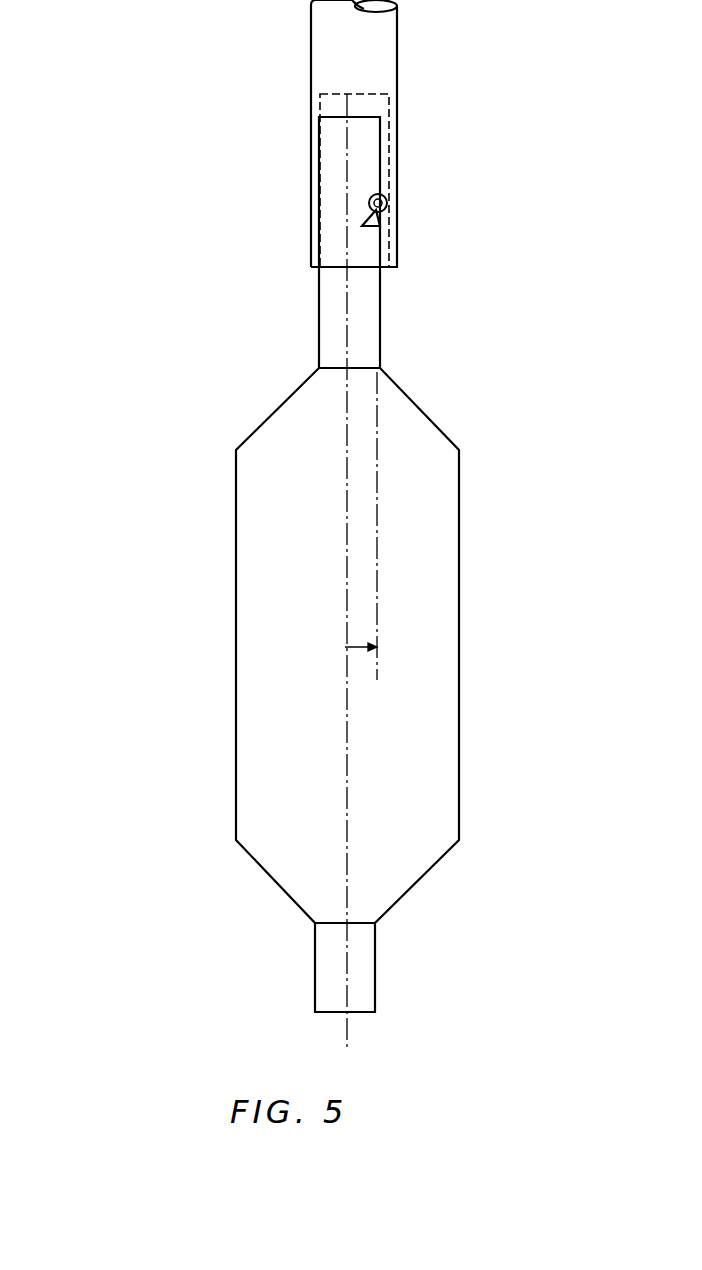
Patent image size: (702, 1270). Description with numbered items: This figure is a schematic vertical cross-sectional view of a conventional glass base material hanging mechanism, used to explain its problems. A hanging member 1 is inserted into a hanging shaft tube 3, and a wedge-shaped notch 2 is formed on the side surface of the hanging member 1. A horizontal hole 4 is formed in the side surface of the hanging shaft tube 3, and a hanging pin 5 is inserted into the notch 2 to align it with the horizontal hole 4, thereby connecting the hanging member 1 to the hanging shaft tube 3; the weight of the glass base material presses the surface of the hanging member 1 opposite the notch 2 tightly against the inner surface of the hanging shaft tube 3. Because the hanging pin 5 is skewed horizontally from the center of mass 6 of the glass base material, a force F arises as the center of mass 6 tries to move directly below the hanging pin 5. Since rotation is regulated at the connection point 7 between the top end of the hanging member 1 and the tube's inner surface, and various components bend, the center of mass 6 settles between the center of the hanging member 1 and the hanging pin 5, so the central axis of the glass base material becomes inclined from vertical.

The hanging member 1 is at (340, 168).
The wedge-shaped notch 2 is at (367, 210).
The hanging shaft tube 3 is at (342, 62).
The horizontal hole 4 is at (383, 193).
The hanging pin 5 is at (383, 212).
The center of mass 6 is at (345, 647).
The connection point 7 is at (320, 117).